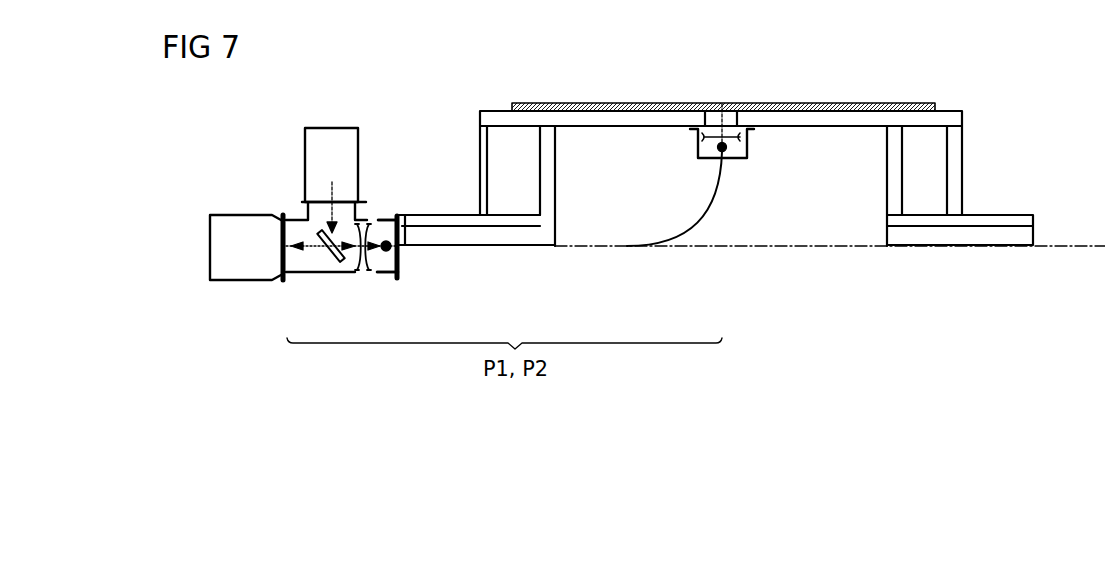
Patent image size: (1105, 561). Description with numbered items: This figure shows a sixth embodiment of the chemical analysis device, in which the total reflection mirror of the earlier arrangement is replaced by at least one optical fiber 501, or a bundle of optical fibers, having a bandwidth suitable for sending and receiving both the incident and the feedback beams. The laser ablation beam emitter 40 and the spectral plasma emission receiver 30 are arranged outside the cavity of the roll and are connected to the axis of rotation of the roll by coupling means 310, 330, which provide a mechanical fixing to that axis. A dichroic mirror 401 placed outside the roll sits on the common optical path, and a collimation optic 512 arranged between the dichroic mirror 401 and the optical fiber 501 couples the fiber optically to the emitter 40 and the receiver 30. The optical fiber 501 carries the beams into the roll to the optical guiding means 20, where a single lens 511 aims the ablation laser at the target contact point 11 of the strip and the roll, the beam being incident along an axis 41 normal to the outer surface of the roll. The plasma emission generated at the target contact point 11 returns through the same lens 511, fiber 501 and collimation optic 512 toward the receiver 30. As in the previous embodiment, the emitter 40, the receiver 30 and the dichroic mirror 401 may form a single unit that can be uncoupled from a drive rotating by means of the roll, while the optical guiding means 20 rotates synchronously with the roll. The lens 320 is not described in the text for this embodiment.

The target contact point 11 is at (722, 95).
The axis 41 is at (723, 118).
The optical guiding means 20 is at (754, 132).
The single lens 511 is at (727, 152).
The optical fiber 501 is at (690, 228).
The collimation optic 512 is at (365, 252).
The coupling means 330 is at (383, 221).
The coupling means 310 is at (305, 215).
The laser ablation beam emitter 40 is at (330, 135).
The spectral plasma emission receiver 30 is at (214, 248).
The dichroic mirror 401 is at (332, 255).
The lens 320 is at (360, 272).